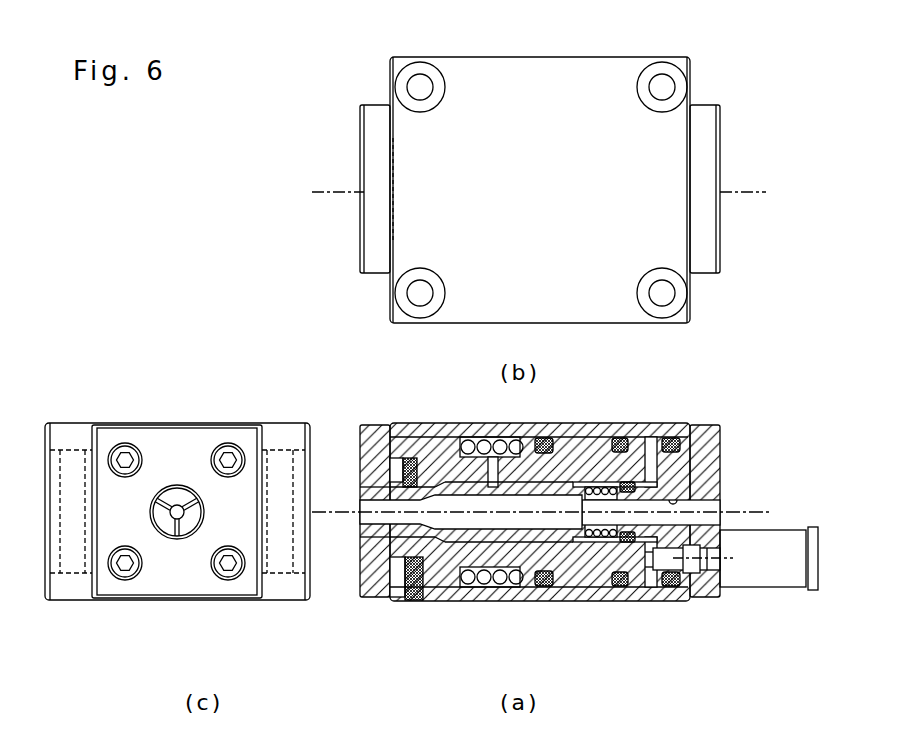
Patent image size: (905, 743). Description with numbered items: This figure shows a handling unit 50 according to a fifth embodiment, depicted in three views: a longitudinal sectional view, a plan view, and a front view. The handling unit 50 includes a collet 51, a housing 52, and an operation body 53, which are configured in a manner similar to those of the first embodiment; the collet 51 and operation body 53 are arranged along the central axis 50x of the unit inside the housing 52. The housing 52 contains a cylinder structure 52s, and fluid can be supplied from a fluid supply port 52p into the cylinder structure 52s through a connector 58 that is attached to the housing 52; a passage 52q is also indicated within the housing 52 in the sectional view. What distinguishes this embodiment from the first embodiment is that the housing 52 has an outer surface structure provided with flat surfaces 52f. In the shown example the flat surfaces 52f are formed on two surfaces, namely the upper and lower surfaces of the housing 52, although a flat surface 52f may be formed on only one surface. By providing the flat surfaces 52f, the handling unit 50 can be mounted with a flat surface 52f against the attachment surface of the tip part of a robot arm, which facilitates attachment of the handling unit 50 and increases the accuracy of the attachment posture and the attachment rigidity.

The handling unit 50 is at (214, 274).
The axis 50x is at (573, 512).
The collet 51 is at (447, 497).
The housing 52 is at (555, 601).
The flat surfaces 52f is at (408, 157).
The fluid supply port 52p is at (703, 598).
The passage 52q is at (675, 500).
The cylinder structure 52s is at (652, 430).
The operation body 53 is at (573, 437).
The connector 58 is at (762, 585).